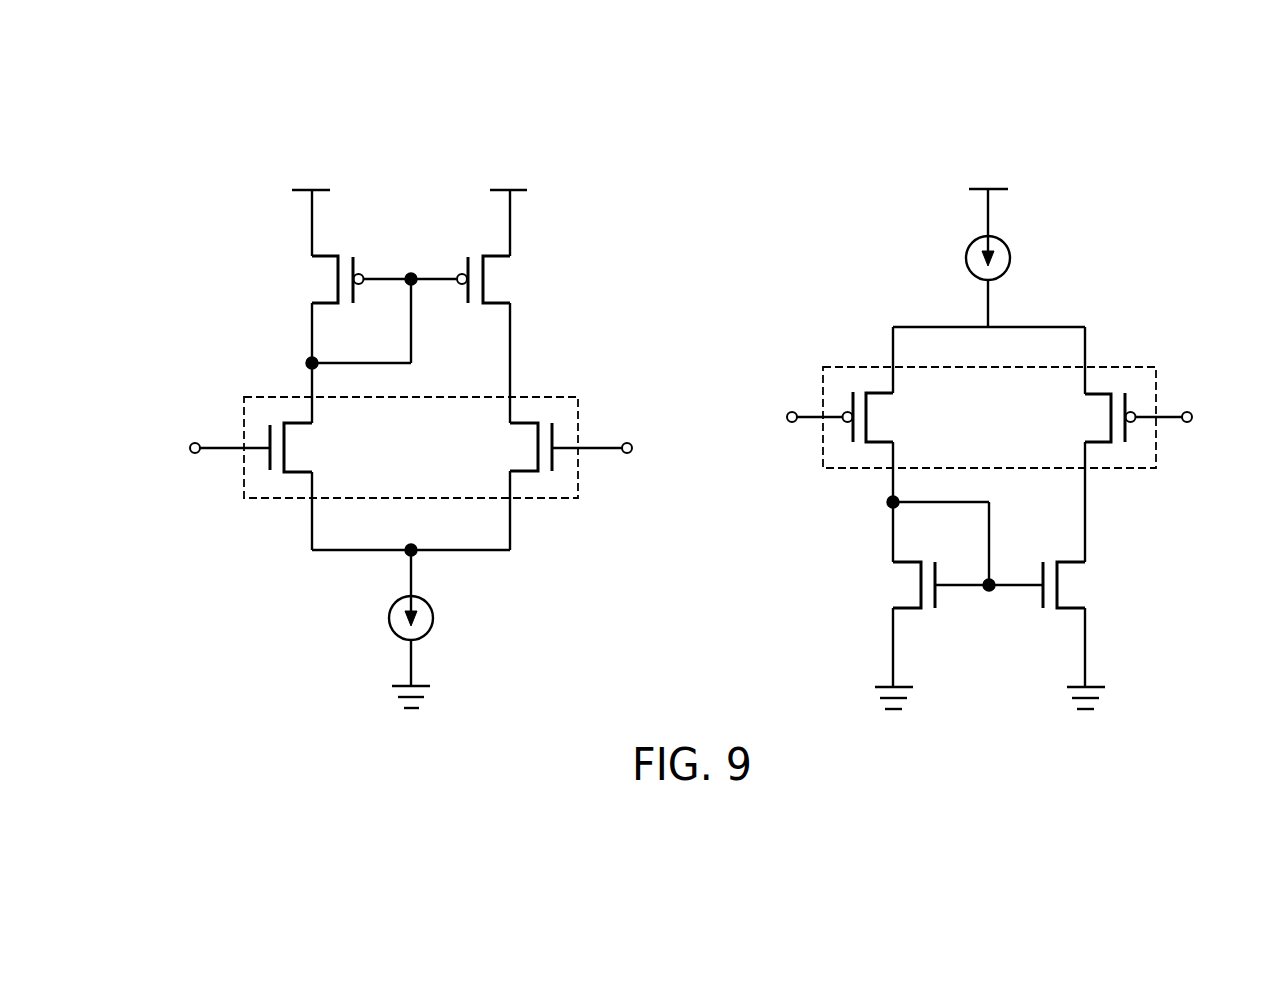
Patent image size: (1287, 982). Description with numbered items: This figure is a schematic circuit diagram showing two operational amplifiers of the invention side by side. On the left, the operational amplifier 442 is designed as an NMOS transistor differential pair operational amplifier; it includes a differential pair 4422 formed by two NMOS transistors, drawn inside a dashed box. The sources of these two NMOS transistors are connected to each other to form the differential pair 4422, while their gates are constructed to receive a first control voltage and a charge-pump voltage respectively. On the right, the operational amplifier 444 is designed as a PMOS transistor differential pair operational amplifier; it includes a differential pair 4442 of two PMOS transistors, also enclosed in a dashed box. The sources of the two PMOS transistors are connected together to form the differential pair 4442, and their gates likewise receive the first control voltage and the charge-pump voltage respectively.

The operational amplifier 442 is at (266, 123).
The operational amplifier 444 is at (872, 123).
The differential pair 4422 is at (578, 485).
The differential pair 4442 is at (1156, 454).